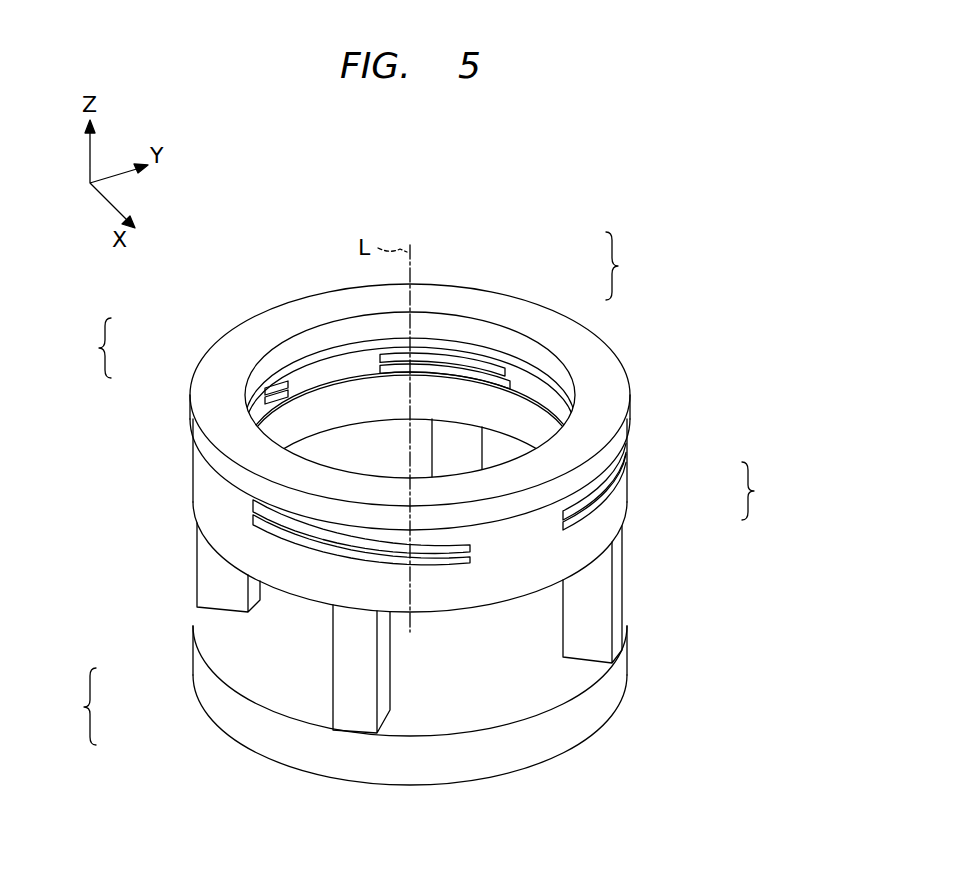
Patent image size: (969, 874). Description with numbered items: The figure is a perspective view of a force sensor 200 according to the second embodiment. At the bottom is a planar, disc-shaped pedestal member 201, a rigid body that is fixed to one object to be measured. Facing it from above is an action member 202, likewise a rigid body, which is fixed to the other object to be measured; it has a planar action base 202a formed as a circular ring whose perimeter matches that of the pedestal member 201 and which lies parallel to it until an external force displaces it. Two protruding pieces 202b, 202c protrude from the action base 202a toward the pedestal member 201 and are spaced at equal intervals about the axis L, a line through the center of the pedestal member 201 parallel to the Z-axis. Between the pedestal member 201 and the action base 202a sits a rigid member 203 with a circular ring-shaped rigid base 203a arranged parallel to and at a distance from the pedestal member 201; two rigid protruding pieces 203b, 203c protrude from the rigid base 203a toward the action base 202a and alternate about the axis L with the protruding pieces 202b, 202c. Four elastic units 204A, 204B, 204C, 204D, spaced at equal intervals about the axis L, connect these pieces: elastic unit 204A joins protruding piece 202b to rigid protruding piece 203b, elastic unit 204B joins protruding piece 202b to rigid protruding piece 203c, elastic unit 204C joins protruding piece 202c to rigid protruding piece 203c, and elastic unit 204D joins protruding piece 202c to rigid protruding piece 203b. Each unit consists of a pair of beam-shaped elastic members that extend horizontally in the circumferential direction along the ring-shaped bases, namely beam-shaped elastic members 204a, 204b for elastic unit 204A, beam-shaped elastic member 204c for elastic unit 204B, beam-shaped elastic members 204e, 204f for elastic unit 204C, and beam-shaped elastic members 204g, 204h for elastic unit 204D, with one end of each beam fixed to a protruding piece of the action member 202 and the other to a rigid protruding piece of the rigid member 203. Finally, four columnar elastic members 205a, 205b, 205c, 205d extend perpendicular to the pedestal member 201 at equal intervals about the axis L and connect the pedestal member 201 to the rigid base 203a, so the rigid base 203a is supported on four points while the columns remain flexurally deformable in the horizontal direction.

The force sensor 200 is at (597, 190).
The pedestal member 201 is at (535, 747).
The action member 202 is at (625, 390).
The action base 202a is at (252, 326).
The protruding piece 202b is at (551, 390).
The protruding piece 202c is at (228, 491).
The rigid member 203 is at (627, 515).
The rigid base 203a is at (587, 548).
The rigid protruding piece 203b is at (517, 540).
The rigid protruding piece 203c is at (323, 373).
The elastic unit 204A is at (689, 487).
The elastic unit 204B is at (528, 310).
The elastic unit 204C is at (166, 359).
The elastic unit 204D is at (249, 622).
The beam-shaped elastic member 204a is at (627, 487).
The beam-shaped elastic member 204b is at (619, 510).
The beam-shaped elastic member 204c is at (453, 347).
The beam-shaped elastic member 204e is at (272, 378).
The beam-shaped elastic member 204f is at (268, 393).
The beam-shaped elastic member 204g is at (308, 538).
The beam-shaped elastic member 204h is at (328, 552).
The columnar elastic member 205a is at (353, 720).
The columnar elastic member 205b is at (617, 627).
The columnar elastic member 205c is at (455, 447).
The columnar elastic member 205d is at (208, 572).